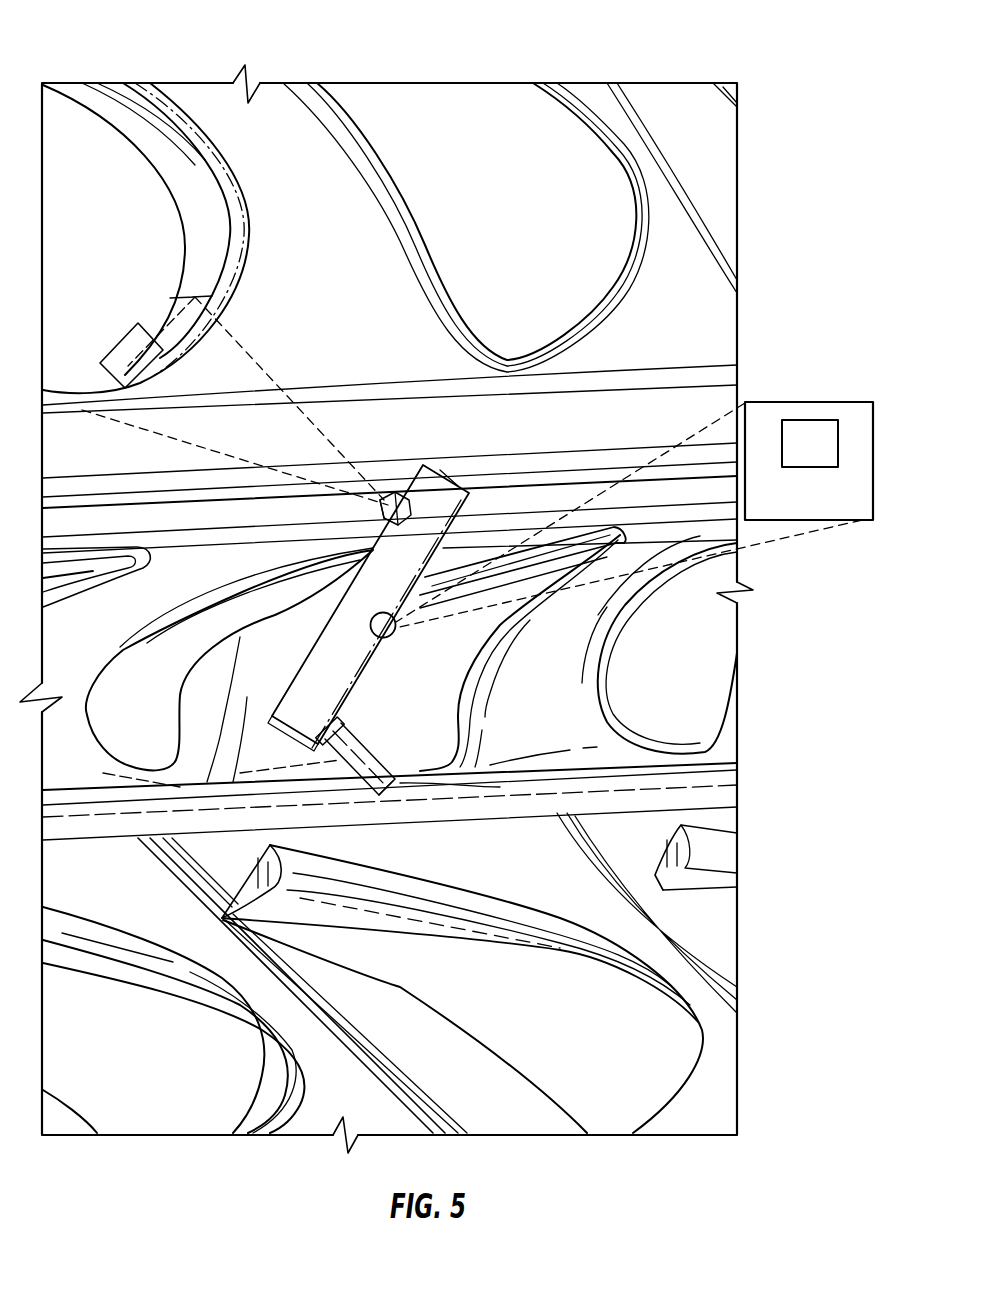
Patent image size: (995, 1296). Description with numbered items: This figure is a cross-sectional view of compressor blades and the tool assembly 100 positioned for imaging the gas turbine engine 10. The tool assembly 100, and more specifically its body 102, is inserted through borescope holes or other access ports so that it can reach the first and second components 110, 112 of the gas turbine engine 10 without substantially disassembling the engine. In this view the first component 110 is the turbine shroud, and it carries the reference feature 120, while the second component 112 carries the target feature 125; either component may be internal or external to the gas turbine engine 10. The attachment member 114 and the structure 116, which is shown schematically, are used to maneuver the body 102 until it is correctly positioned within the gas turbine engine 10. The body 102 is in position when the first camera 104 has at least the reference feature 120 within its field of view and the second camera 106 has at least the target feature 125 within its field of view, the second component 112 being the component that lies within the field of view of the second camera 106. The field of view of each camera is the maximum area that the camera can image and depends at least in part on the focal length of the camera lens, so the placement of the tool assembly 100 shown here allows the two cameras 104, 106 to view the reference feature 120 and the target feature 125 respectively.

The gas turbine engine 10 is at (120, 48).
The tool assembly 100 is at (455, 459).
The body 102 is at (313, 680).
The first camera 104 is at (384, 626).
The second camera 106 is at (397, 496).
The first component 110 is at (828, 510).
The second component 112 is at (202, 243).
The attachment member 114 is at (387, 768).
The structure 116 is at (500, 787).
The reference feature 120 is at (828, 456).
The target feature 125 is at (124, 352).